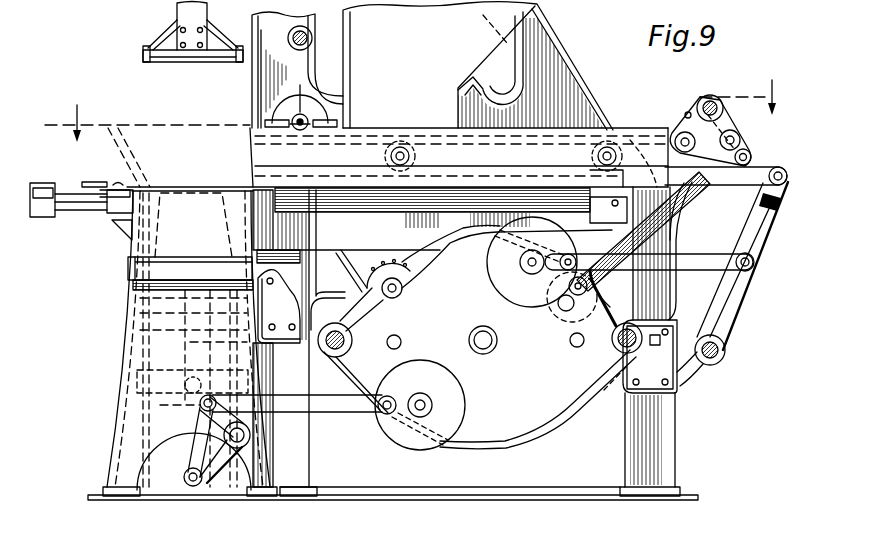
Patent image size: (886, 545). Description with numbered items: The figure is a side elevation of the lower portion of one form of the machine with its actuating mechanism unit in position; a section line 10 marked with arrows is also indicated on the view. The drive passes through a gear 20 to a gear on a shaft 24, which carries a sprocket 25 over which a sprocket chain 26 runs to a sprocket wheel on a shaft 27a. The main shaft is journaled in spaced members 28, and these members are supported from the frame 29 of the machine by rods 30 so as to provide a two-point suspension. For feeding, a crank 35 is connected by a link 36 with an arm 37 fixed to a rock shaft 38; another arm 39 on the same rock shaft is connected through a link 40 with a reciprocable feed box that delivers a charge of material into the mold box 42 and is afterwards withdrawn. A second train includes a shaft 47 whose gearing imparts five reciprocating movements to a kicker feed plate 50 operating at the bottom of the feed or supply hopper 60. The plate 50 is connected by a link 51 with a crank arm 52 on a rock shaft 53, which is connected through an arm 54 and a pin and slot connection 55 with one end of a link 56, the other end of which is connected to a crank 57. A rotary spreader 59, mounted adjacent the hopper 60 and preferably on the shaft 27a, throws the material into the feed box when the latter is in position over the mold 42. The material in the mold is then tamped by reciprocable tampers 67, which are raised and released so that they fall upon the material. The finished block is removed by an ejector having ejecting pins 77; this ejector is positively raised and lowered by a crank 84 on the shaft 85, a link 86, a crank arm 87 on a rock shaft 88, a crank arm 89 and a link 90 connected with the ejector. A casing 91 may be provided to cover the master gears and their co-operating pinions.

The section line 10 is at (421, 111).
The gear 20 is at (401, 342).
The shaft 24 is at (403, 288).
The sprocket 25 is at (420, 268).
The sprocket chain 26 is at (355, 263).
The shaft 27a is at (292, 120).
The spaced members 28 is at (510, 420).
The frame 29 is at (677, 462).
The rods 30 is at (353, 336).
The crank 35 is at (503, 292).
The link 36 is at (702, 268).
The arm 37 is at (732, 310).
The rock shaft 38 is at (722, 354).
The arm 39 is at (760, 246).
The link 40 is at (735, 183).
The mold box 42 is at (157, 230).
The shaft 47 is at (574, 347).
The kicker feed plate 50 is at (250, 160).
The link 51 is at (673, 134).
The crank arm 52 is at (690, 110).
The rock shaft 53 is at (711, 96).
The arm 54 is at (735, 130).
The pin and slot connection 55 is at (752, 152).
The link 56 is at (668, 210).
The crank 57 is at (570, 305).
The rotary spreader 59 is at (328, 120).
The feed or supply hopper 60 is at (528, 14).
The reciprocable tampers 67 is at (143, 50).
The ejecting pins 77 is at (135, 300).
The crank 84 is at (460, 410).
The shaft 85 is at (432, 400).
The link 86 is at (352, 420).
The crank arm 87 is at (220, 420).
The rock shaft 88 is at (248, 444).
The crank arm 89 is at (220, 483).
The link 90 is at (193, 450).
The casing 91 is at (540, 444).